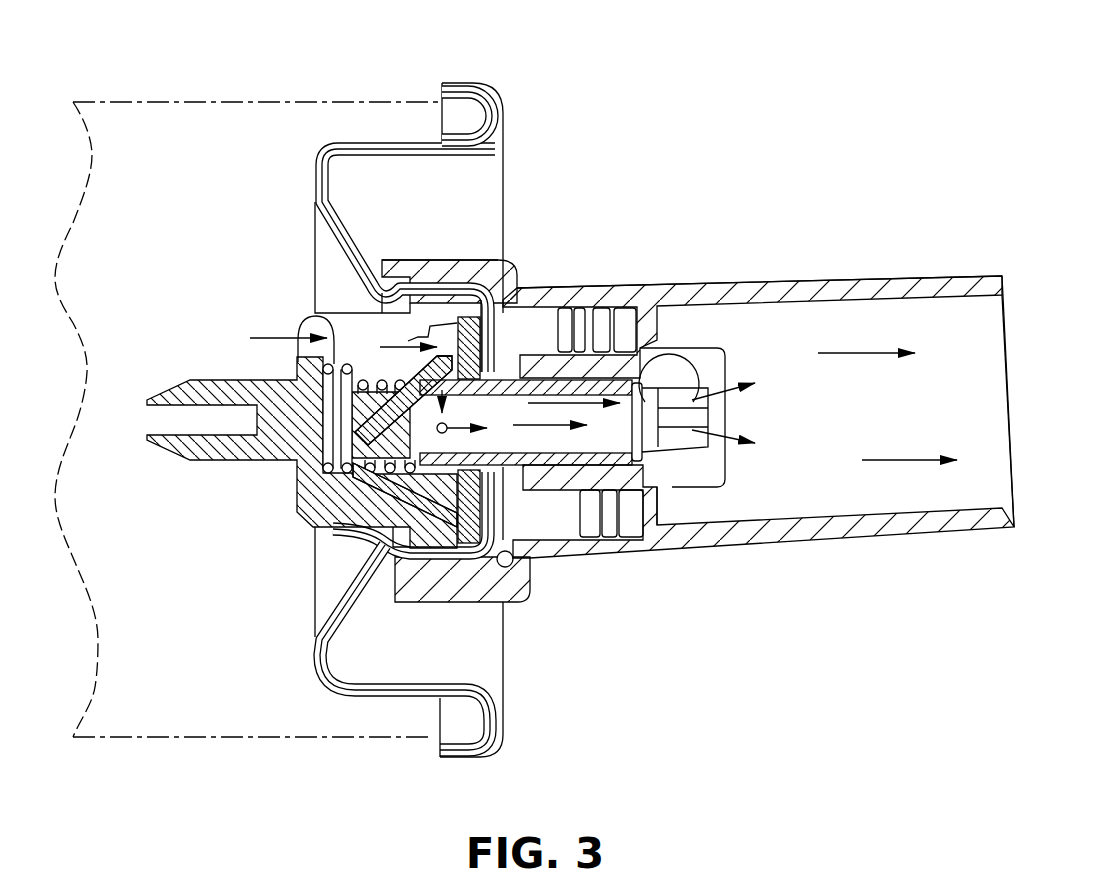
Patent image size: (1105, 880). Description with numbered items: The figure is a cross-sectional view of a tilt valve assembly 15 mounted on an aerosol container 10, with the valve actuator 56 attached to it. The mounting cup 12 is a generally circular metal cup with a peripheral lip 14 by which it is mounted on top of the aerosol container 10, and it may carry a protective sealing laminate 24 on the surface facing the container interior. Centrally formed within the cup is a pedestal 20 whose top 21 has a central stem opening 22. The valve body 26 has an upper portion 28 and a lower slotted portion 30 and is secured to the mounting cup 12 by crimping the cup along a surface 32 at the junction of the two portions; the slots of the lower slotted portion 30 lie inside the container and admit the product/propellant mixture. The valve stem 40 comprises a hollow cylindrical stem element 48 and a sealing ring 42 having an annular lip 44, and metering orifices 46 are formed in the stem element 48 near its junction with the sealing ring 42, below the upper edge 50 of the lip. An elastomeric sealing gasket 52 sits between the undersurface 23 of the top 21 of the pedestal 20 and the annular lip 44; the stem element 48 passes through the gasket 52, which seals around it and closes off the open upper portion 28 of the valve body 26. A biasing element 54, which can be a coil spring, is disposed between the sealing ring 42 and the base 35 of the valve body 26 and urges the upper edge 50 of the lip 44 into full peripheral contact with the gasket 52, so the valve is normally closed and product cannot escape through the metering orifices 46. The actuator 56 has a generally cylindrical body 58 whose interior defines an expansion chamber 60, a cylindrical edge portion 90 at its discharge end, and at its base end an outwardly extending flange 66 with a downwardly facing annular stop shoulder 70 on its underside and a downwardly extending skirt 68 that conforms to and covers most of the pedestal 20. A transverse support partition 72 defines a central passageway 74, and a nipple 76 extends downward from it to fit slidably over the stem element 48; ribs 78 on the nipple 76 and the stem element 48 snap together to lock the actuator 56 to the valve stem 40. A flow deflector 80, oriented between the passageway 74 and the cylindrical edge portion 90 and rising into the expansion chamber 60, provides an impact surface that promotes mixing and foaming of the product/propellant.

The aerosol container 10 is at (168, 101).
The mounting cup 12 is at (506, 170).
The peripheral lip 14 is at (453, 82).
The tilt valve assembly 15 is at (767, 140).
The pedestal 20 is at (392, 558).
The top 21 is at (470, 350).
The central stem opening 22 is at (555, 348).
The undersurface 23 is at (443, 345).
The protective sealing laminate 24 is at (318, 160).
The valve body 26 is at (285, 496).
The upper portion 28 is at (470, 627).
The lower slotted portion 30 is at (330, 530).
The surface 32 is at (322, 572).
The base 35 is at (300, 342).
The valve stem 40 is at (592, 443).
The sealing ring 42 is at (407, 360).
The annular lip 44 is at (495, 514).
The metering orifices 46 is at (447, 397).
The stem element 48 is at (483, 454).
The upper edge 50 is at (502, 617).
The sealing gasket 52 is at (490, 375).
The biasing element 54 is at (318, 325).
The valve actuator 56 is at (840, 268).
The cylindrical body 58 is at (752, 285).
The expansion chamber 60 is at (850, 418).
The flange 66 is at (512, 275).
The skirt 68 is at (424, 258).
The annular stop shoulder 70 is at (530, 590).
The transverse support partition 72 is at (667, 513).
The central passageway 74 is at (663, 400).
The nipple 76 is at (613, 352).
The ribs 78 is at (582, 340).
The flow deflector 80 is at (725, 415).
The cylindrical edge portion 90 is at (1010, 402).